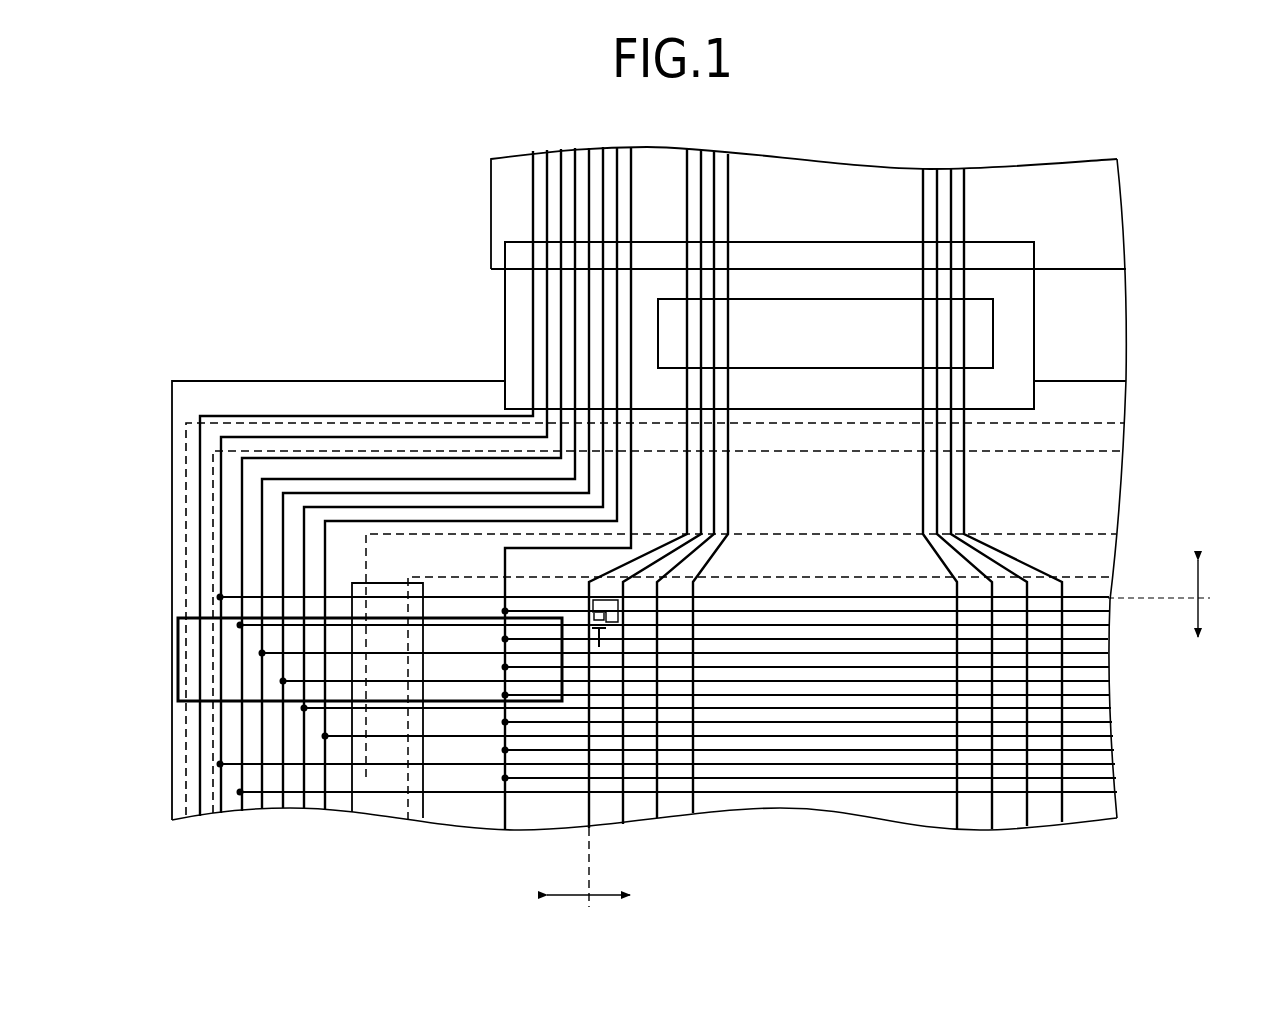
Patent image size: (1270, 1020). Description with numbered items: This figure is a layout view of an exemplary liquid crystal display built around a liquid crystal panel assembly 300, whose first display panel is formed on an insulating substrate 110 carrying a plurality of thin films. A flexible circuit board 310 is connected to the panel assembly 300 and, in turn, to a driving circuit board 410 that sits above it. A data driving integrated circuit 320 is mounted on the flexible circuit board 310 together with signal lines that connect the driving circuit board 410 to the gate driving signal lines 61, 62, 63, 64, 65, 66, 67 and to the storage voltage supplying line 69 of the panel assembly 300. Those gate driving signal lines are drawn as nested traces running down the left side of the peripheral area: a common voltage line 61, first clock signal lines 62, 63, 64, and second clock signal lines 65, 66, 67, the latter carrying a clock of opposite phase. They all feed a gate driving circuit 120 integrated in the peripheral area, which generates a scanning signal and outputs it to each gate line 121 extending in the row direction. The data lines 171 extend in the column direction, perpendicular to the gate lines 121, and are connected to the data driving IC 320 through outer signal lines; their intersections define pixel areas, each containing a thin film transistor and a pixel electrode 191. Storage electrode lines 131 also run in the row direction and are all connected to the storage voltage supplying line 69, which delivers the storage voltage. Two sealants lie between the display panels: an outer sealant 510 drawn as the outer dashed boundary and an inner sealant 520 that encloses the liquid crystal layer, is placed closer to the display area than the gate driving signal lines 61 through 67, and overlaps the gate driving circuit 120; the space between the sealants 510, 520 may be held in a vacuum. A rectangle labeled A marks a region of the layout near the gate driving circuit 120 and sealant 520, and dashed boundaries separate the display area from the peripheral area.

The liquid crystal panel assembly 300 is at (148, 351).
The insulating substrate 110 is at (172, 746).
The driving circuit board 410 is at (491, 208).
The flexible circuit board 310 is at (505, 290).
The data driving integrated circuit 320 is at (993, 332).
The outer sealant 510 is at (186, 457).
The common voltage (Vss) line 61 is at (220, 416).
The first clock signal (CK) line 62 is at (240, 437).
The first clock signal (CK) line 63 is at (270, 458).
The first clock signal (CK) line 64 is at (305, 479).
The second clock signal (CKB) line 65 is at (340, 493).
The second clock signal (CKB) line 66 is at (377, 507).
The second clock signal (CKB) line 67 is at (416, 521).
The storage voltage supplying line 69 is at (503, 808).
The data line 171 is at (587, 807).
The inner sealant 520 is at (366, 777).
The gate driving circuit 120 is at (352, 588).
The gate line 121 is at (1090, 591).
The storage electrode line 131 is at (1090, 613).
The pixel electrode 191 is at (600, 602).
The region A is at (178, 657).